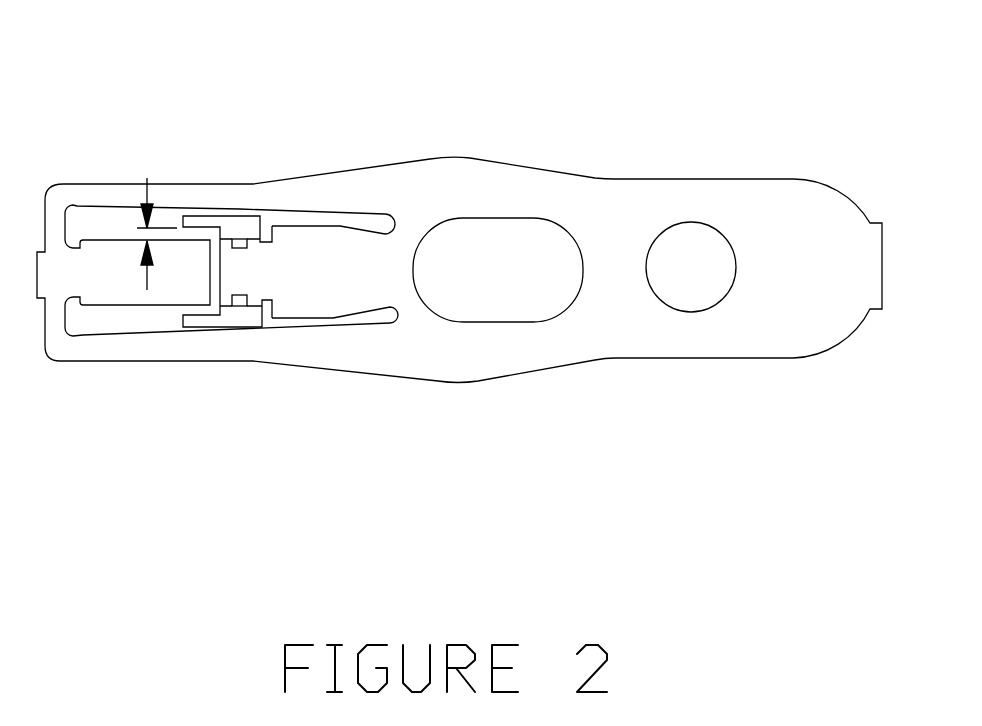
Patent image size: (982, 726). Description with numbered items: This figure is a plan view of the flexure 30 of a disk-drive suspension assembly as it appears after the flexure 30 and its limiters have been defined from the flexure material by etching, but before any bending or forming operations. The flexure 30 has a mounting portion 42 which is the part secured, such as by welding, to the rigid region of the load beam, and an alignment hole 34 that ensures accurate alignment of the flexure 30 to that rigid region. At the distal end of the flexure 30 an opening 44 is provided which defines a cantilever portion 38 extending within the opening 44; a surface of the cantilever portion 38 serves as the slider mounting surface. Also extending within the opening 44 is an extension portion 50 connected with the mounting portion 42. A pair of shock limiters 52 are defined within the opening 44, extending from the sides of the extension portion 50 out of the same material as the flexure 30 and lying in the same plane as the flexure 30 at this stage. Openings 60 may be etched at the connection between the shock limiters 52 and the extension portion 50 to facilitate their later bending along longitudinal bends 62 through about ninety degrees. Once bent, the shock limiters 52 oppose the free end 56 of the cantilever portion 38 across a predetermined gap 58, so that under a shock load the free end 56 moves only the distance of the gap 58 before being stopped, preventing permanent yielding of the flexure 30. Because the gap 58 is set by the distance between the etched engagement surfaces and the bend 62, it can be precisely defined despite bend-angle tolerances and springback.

The flexure 30 is at (460, 173).
The alignment hole 34 is at (697, 307).
The cantilever portion 38 is at (92, 267).
The mounting portion 42 is at (655, 194).
The opening 44 is at (98, 334).
The extension portion 50 is at (342, 295).
The shock limiters 52 is at (216, 215).
The free end 56 is at (188, 283).
The gap 58 is at (150, 230).
The openings 60 is at (247, 240).
The longitudinal bends 62 is at (222, 240).